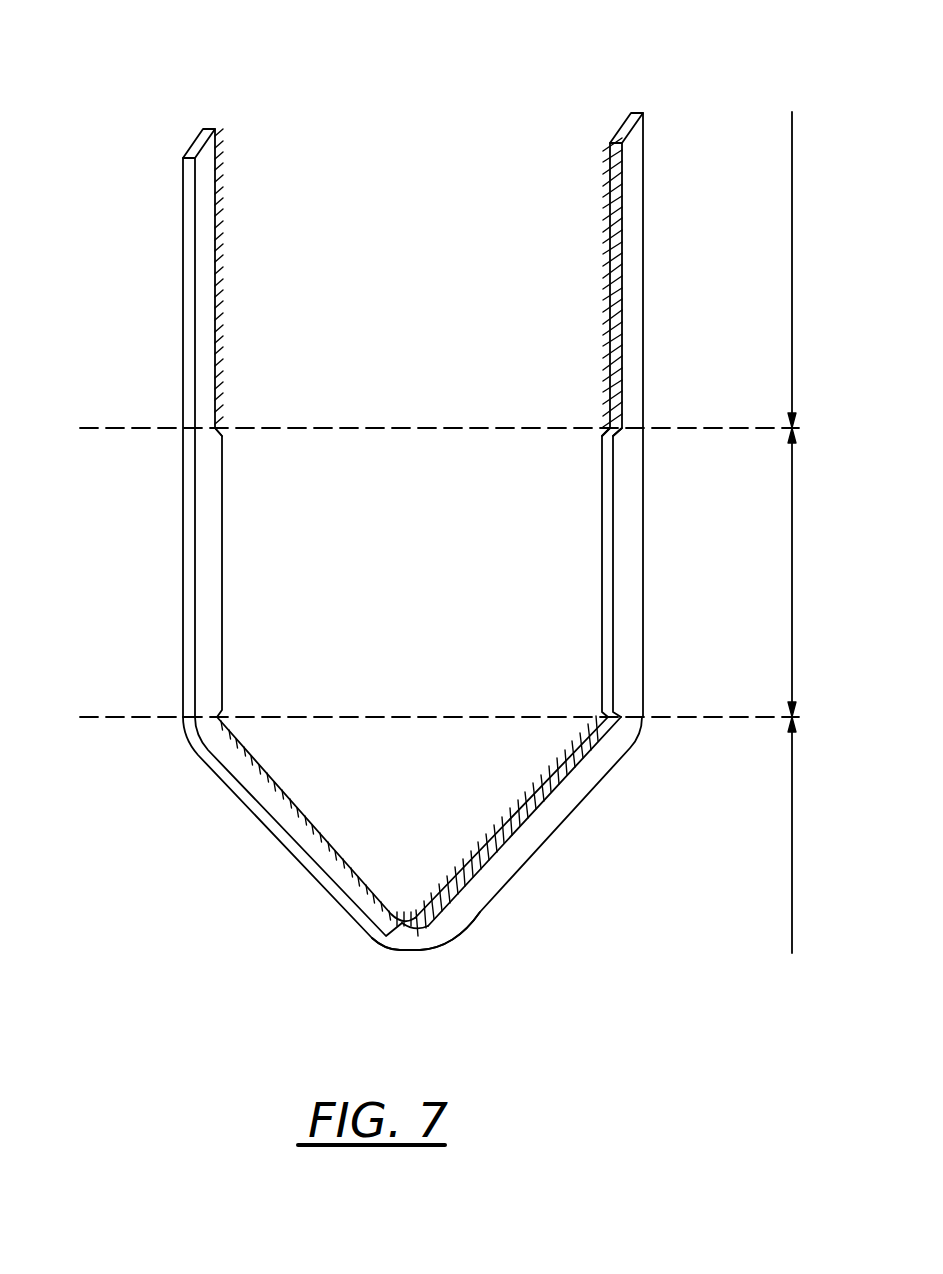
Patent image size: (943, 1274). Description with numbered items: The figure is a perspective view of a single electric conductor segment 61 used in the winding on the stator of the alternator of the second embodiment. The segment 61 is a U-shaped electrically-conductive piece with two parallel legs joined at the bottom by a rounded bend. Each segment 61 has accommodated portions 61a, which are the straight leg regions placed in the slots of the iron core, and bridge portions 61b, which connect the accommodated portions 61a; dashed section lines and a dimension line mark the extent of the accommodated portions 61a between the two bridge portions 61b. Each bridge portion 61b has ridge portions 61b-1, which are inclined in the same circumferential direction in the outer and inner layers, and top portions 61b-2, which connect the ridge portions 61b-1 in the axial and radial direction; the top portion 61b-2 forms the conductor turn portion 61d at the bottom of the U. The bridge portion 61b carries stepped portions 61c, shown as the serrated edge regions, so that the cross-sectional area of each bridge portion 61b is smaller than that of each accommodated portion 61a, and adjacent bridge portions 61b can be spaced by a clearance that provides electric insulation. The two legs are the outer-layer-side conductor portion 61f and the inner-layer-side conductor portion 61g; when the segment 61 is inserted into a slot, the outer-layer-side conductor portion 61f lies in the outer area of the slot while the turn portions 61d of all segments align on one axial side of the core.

The electric conductor segment 61 is at (441, 97).
The accommodated portion 61a is at (530, 423).
The bridge portion 61b is at (815, 532).
The ridge portion 61b-1 is at (504, 876).
The top portion 61b-2 is at (420, 945).
The stepped portion 61c is at (607, 312).
The conductor turn portion 61d is at (426, 931).
The outer-layer-side conductor portion 61f is at (205, 396).
The inner-layer-side conductor portion 61g is at (603, 462).